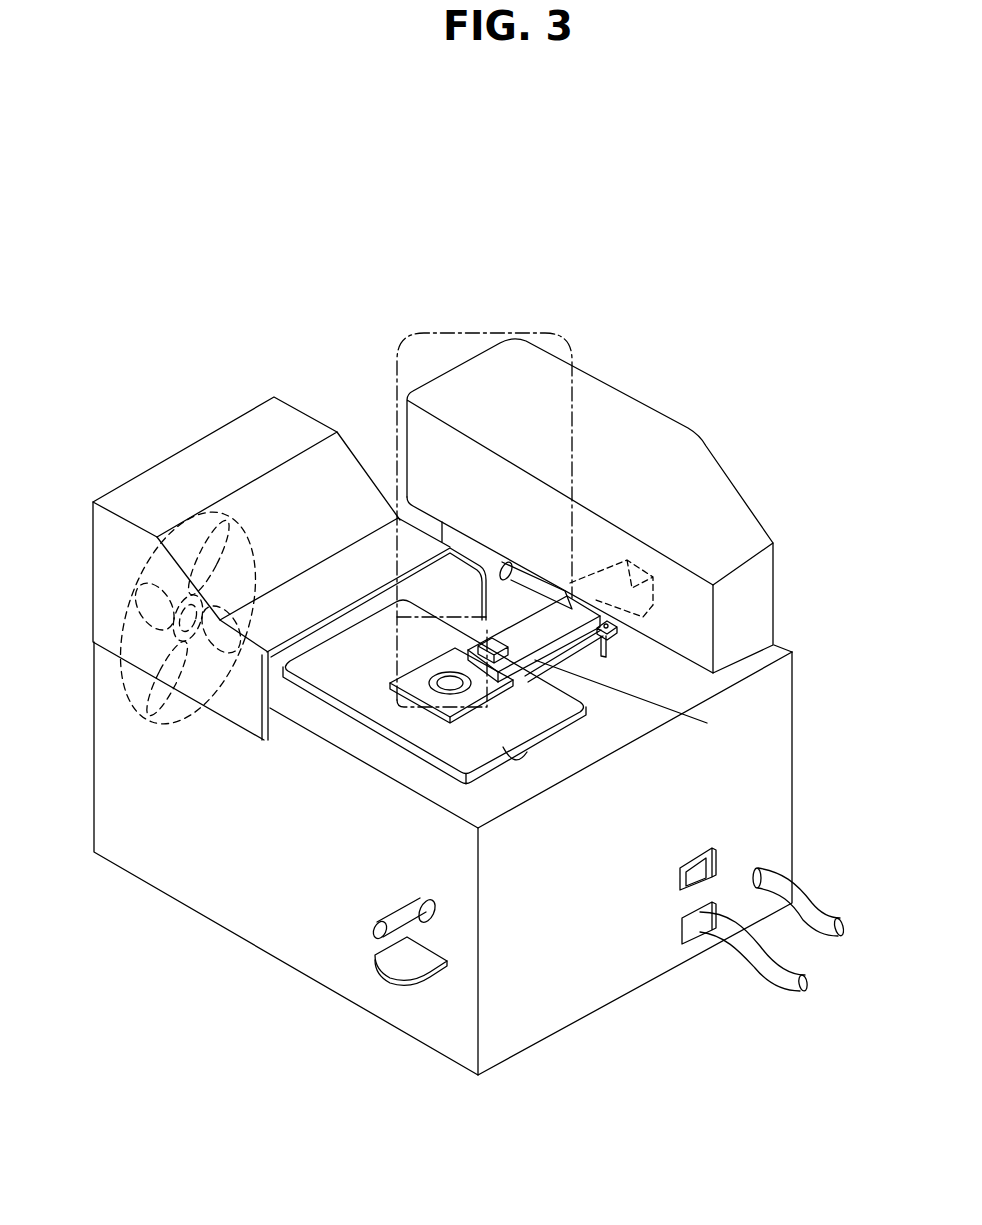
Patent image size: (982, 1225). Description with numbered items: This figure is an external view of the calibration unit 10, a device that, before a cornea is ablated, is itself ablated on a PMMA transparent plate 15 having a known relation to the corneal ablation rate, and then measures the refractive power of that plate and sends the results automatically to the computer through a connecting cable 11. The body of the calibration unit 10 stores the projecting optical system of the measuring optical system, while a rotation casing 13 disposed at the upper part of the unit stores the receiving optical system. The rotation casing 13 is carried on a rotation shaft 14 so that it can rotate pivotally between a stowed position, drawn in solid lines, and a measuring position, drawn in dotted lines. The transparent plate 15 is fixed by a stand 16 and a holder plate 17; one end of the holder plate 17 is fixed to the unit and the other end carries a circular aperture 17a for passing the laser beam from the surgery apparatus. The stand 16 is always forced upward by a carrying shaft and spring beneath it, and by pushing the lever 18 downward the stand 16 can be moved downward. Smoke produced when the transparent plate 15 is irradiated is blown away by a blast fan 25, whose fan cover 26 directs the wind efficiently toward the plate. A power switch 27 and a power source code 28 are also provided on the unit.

The calibration unit 10 is at (289, 293).
The connecting cable 11 is at (763, 968).
The rotation casing 13 is at (605, 402).
The rotation shaft 14 is at (461, 545).
The transparent plate 15 is at (417, 683).
The stand 16 is at (452, 737).
The holder plate 17 is at (532, 626).
The circular aperture 17a is at (503, 688).
The lever 18 is at (373, 920).
The blast fan 25 is at (140, 572).
The fan cover 26 is at (260, 440).
The power switch 27 is at (680, 865).
The power source code 28 is at (800, 908).